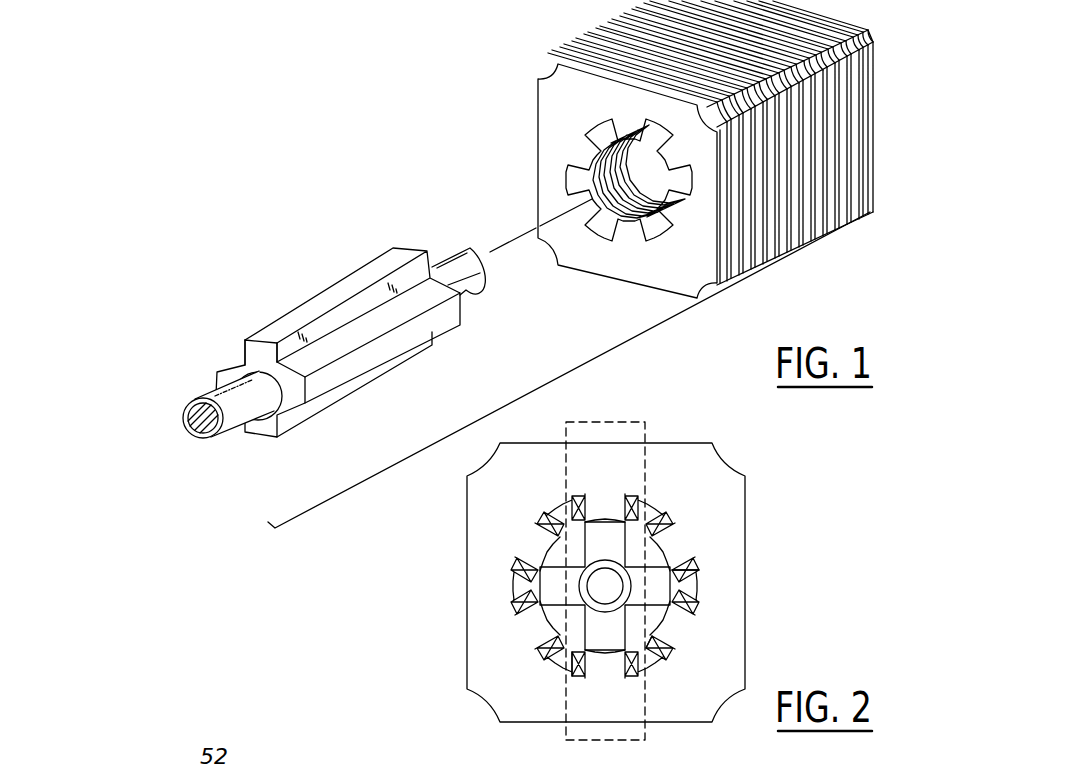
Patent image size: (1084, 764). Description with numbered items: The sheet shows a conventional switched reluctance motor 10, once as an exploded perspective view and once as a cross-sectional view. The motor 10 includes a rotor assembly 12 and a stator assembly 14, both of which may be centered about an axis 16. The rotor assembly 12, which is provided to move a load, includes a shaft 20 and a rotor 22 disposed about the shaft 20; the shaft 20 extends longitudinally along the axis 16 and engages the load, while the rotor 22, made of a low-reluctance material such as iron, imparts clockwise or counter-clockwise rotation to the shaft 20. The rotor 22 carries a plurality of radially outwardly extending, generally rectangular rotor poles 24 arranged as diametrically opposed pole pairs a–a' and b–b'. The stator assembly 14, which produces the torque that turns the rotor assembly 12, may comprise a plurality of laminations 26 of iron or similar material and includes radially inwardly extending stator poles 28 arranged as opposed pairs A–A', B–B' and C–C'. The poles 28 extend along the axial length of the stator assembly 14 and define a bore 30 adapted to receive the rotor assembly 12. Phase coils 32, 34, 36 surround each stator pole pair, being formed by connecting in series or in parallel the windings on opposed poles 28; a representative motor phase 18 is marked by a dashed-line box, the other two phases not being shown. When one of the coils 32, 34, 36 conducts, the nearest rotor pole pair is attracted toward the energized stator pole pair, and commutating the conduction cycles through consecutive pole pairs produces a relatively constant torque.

In FIG. 1, the switched reluctance motor 10 is at (628, 344).
In FIG. 2, the switched reluctance motor 10 is at (797, 468).
In FIG. 1, the rotor assembly 12 is at (332, 319).
In FIG. 1, the stator assembly 14 is at (658, 163).
In FIG. 1, the axis 16 is at (147, 452).
In FIG. 2, the motor phase 18 is at (647, 431).
In FIG. 1, the shaft 20 is at (451, 258).
In FIG. 1, the rotor 22 is at (286, 371).
In FIG. 1, the rotor poles 24 is at (243, 352).
In FIG. 2, the rotor poles 24 is at (537, 585).
In FIG. 1, the laminations 26 is at (710, 292).
In FIG. 2, the laminations 26 is at (745, 587).
In FIG. 1, the stator poles 28 is at (580, 188).
In FIG. 2, the stator poles 28 is at (535, 562).
In FIG. 1, the bore 30 is at (660, 160).
In FIG. 2, the phase coil 32 is at (577, 676).
In FIG. 2, the phase coil 34 is at (668, 650).
In FIG. 2, the phase coil 36 is at (700, 562).